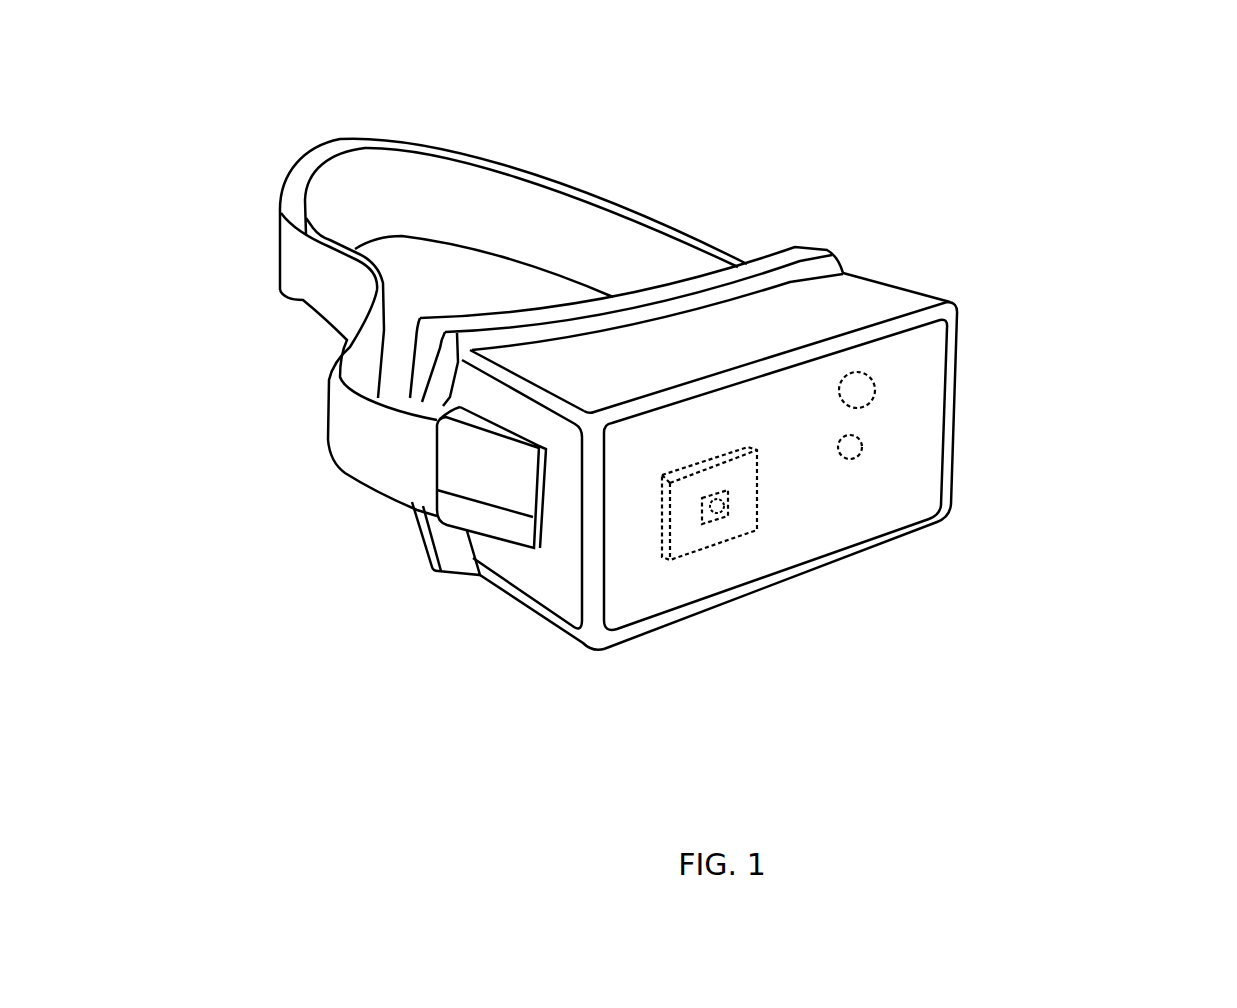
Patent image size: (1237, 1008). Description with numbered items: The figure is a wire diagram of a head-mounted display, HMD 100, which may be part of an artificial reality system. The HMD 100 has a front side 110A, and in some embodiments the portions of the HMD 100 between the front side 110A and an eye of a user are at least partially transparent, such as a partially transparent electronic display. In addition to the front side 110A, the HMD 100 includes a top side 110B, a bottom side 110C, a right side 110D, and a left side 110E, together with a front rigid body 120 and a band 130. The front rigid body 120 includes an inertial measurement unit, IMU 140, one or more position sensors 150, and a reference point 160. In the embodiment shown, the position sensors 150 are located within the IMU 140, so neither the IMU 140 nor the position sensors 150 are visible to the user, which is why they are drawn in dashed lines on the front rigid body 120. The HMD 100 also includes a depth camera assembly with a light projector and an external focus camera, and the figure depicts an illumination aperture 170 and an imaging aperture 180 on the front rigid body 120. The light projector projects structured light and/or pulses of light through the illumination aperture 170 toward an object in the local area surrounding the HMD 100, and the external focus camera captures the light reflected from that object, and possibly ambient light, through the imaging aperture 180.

The HMD 100 is at (669, 82).
The front side 110A is at (635, 595).
The top side 110B is at (552, 358).
The bottom side 110C is at (507, 613).
The right side 110D is at (553, 570).
The left side 110E is at (925, 290).
The front rigid body 120 is at (696, 481).
The band 130 is at (627, 210).
The inertial measurement unit 140 is at (757, 520).
The position sensors 150 is at (702, 522).
The reference point 160 is at (721, 513).
The illumination aperture 170 is at (862, 448).
The imaging aperture 180 is at (876, 390).